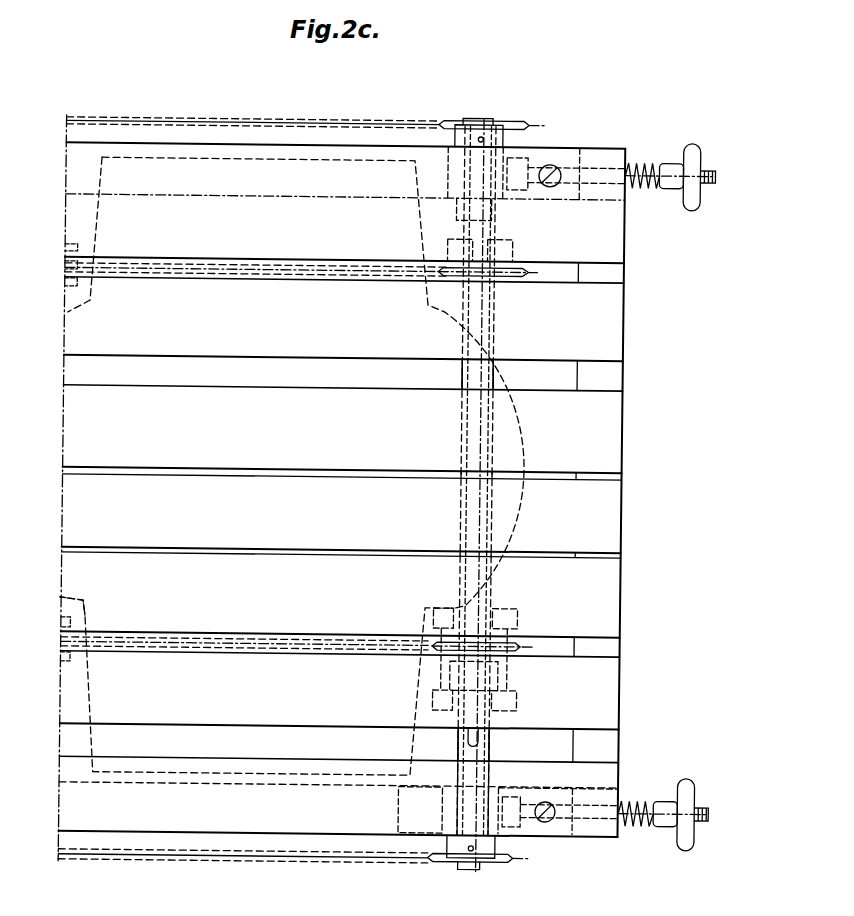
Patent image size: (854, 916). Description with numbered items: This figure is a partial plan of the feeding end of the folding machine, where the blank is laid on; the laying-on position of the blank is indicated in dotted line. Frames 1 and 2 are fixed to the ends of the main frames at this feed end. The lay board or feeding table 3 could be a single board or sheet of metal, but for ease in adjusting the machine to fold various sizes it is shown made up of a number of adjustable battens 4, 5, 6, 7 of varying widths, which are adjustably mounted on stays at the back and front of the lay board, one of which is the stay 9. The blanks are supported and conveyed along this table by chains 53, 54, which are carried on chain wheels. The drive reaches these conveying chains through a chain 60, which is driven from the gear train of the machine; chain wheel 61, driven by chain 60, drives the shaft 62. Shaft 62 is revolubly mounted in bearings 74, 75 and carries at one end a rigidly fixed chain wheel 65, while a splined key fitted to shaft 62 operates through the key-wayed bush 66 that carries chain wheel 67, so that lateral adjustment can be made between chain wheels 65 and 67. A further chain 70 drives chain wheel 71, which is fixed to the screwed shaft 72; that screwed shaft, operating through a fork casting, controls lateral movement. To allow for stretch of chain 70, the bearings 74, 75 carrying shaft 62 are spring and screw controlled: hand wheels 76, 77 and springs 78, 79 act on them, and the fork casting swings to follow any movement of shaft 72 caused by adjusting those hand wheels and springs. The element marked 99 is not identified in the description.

The frame 1 is at (331, 822).
The frame 2 is at (130, 177).
The lay board or feeding table 3 is at (317, 469).
The adjustable batten 4 is at (316, 357).
The adjustable batten 5 is at (317, 549).
The adjustable batten 6 is at (318, 634).
The adjustable batten 7 is at (319, 726).
The stay 9 is at (576, 376).
The chain 53 is at (323, 650).
The chain 54 is at (268, 281).
The chain 60 is at (241, 120).
The chain wheel 61 is at (514, 121).
The shaft 62 is at (461, 375).
The chain wheel 65 is at (512, 268).
The key-wayed bush 66 is at (510, 676).
The chain wheel 67 is at (510, 640).
The chain 70 is at (266, 860).
The chain wheel 71 is at (516, 862).
The screwed shaft 72 is at (474, 866).
The bearing 74 is at (449, 810).
The bearing 75 is at (454, 179).
The hand wheel 76 is at (689, 777).
The hand wheel 77 is at (689, 197).
The spring 78 is at (638, 797).
The spring 79 is at (637, 187).
The guide 99 is at (86, 613).